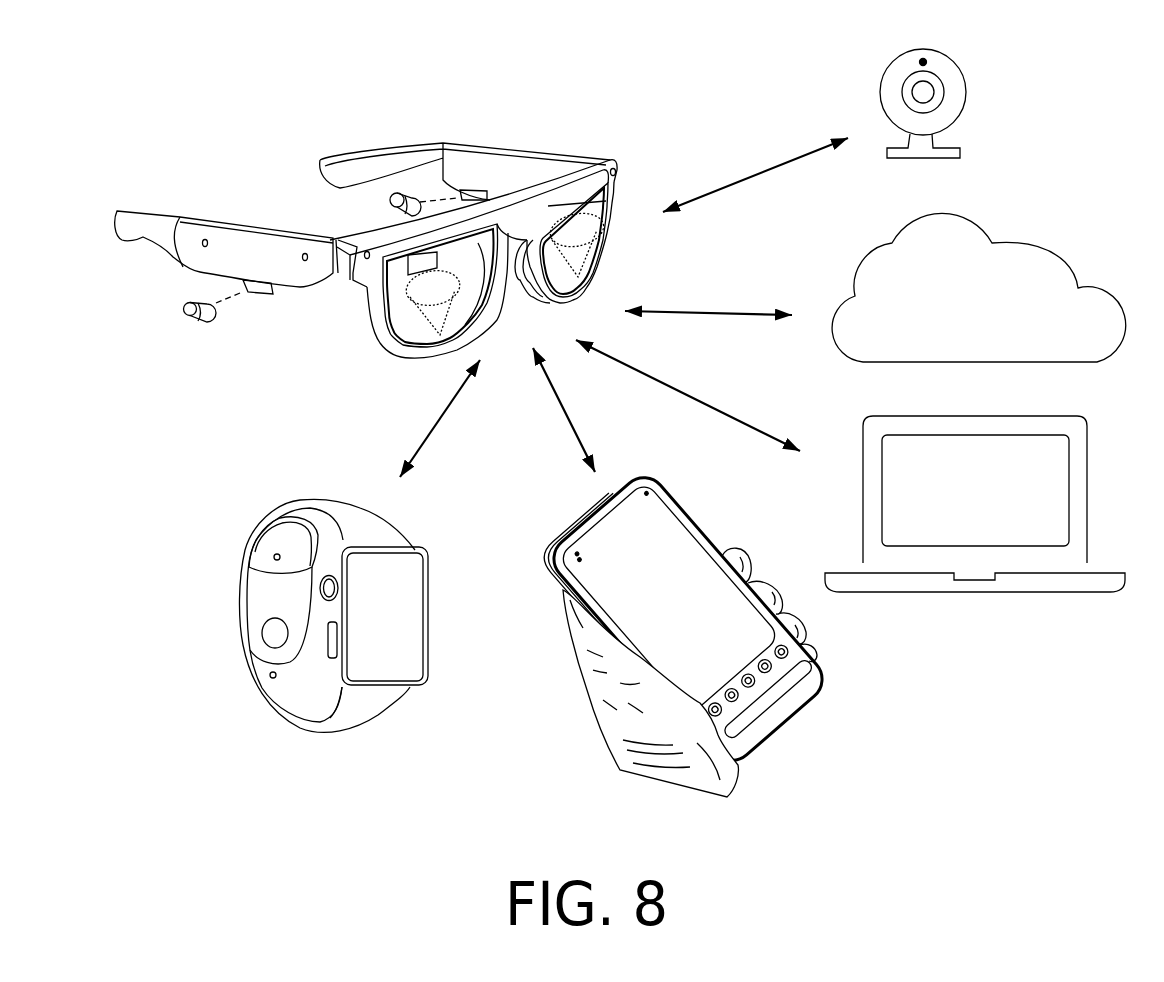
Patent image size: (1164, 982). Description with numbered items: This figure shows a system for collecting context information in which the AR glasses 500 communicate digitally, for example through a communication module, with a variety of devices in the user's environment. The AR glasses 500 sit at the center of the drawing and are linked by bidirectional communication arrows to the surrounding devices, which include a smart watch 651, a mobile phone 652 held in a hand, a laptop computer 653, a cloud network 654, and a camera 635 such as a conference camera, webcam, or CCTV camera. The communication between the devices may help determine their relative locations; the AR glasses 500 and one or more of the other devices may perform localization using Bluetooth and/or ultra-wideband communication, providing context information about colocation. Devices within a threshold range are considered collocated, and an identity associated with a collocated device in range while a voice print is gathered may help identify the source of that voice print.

The AR glasses 500 is at (143, 205).
The camera 635 is at (898, 58).
The cloud network 654 is at (863, 258).
The laptop computer 653 is at (862, 448).
The smart watch 651 is at (313, 500).
The mobile phone 652 is at (572, 530).